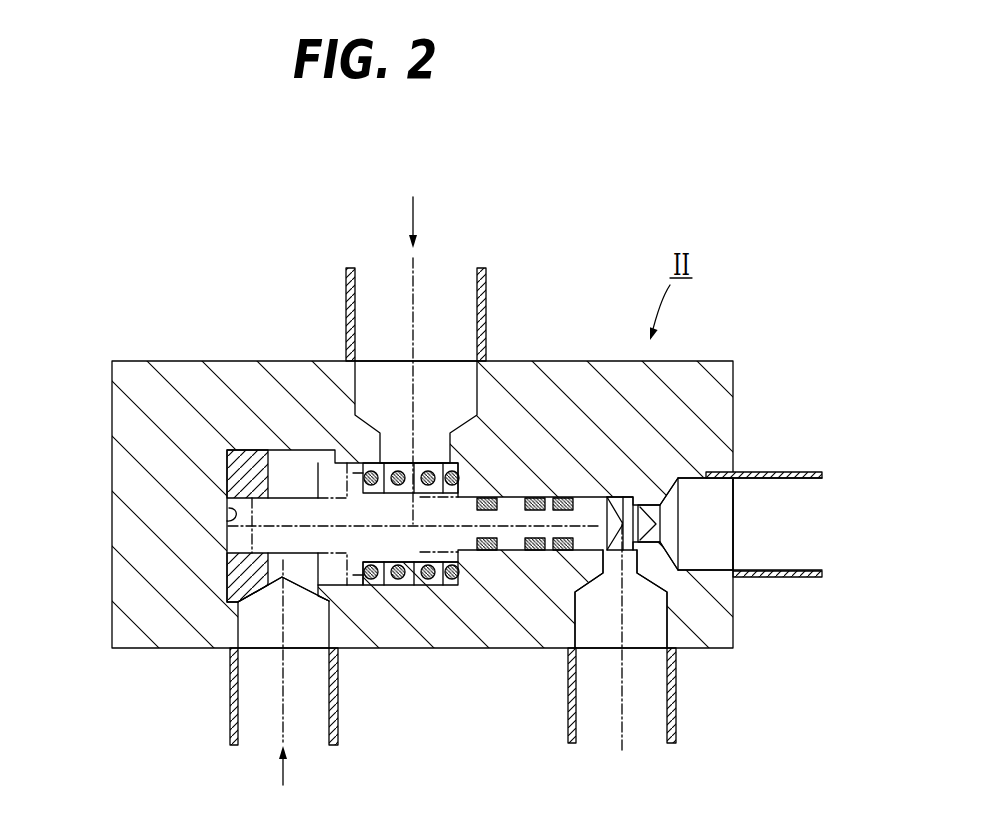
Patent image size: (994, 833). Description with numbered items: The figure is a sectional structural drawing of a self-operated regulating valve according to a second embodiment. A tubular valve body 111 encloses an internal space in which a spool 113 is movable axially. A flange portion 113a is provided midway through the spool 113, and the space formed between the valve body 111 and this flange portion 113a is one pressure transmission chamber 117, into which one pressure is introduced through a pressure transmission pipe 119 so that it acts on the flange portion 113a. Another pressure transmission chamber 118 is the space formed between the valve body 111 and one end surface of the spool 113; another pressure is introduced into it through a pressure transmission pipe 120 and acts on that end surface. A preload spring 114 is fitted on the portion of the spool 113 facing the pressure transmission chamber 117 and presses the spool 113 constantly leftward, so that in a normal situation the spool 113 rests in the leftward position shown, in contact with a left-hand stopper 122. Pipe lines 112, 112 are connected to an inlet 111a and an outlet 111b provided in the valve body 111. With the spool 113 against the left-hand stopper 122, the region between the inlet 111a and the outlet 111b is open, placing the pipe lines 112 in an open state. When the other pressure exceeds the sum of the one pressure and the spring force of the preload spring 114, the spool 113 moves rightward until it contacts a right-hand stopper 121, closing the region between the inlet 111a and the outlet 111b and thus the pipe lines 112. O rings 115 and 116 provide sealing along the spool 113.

The valve body 111 is at (720, 403).
The inlet 111a is at (735, 502).
The outlet 111b is at (650, 648).
The pipe line 112 is at (797, 473).
The spool 113 is at (408, 502).
The flange portion 113a is at (353, 473).
The preload spring 114 is at (433, 585).
The O ring 115 is at (485, 550).
The O ring 116 is at (557, 550).
The pressure transmission chamber 117 is at (437, 363).
The pressure transmission chamber 118 is at (307, 575).
The pressure transmission pipe 119 is at (483, 282).
The pressure transmission pipe 120 is at (230, 702).
The right-hand stopper 121 is at (640, 517).
The left-hand stopper 122 is at (227, 521).